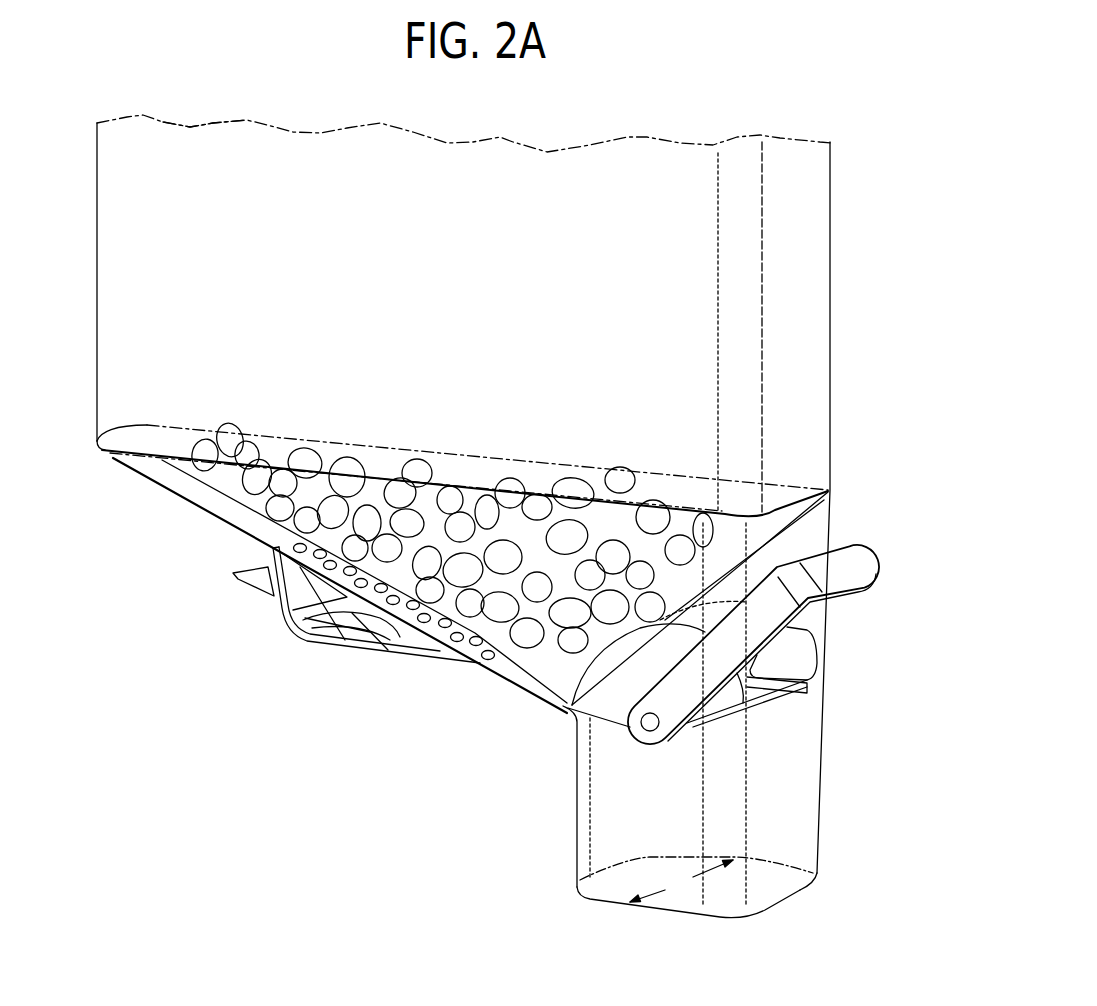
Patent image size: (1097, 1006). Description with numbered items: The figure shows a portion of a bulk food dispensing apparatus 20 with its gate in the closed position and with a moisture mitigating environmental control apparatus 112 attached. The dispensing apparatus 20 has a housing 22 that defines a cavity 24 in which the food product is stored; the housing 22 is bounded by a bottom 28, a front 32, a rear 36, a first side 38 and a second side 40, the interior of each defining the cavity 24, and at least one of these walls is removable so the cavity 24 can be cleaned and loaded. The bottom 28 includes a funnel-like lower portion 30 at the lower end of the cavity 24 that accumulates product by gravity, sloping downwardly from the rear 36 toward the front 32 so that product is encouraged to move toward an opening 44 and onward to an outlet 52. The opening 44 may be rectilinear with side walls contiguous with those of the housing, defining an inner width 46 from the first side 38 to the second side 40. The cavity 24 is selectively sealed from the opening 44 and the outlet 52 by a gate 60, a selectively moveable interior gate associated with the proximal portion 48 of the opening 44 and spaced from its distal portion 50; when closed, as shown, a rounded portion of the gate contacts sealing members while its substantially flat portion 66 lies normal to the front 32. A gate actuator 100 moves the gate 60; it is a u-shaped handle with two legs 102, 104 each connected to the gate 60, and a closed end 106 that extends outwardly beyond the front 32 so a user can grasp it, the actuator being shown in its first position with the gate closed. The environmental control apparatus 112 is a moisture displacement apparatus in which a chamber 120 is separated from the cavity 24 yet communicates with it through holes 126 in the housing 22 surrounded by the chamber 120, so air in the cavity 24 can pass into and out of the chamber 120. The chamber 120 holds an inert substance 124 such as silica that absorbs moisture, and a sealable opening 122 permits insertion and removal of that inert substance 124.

The bulk food dispensing apparatus 20 is at (736, 104).
The housing 22 is at (212, 162).
The cavity 24 is at (431, 344).
The bottom 28 is at (113, 459).
The funnel-like lower portion 30 is at (242, 502).
The front 32 is at (800, 385).
The rear 36 is at (97, 303).
The first side 38 is at (737, 184).
The second side 40 is at (830, 297).
The opening 44 is at (798, 785).
The inner width 46 is at (681, 881).
The proximal portion 48 is at (600, 676).
The distal portion 50 is at (808, 887).
The outlet 52 is at (785, 903).
The gate 60 is at (836, 661).
The substantially flat portion 66 is at (613, 718).
The gate actuator 100 is at (893, 547).
The leg 102 is at (745, 658).
The leg 104 is at (878, 592).
The closed end 106 is at (843, 560).
The environmental control apparatus 112 is at (320, 650).
The chamber 120 is at (386, 649).
The sealable opening 122 is at (265, 582).
The inert substance 124 is at (300, 643).
The holes 126 is at (432, 661).